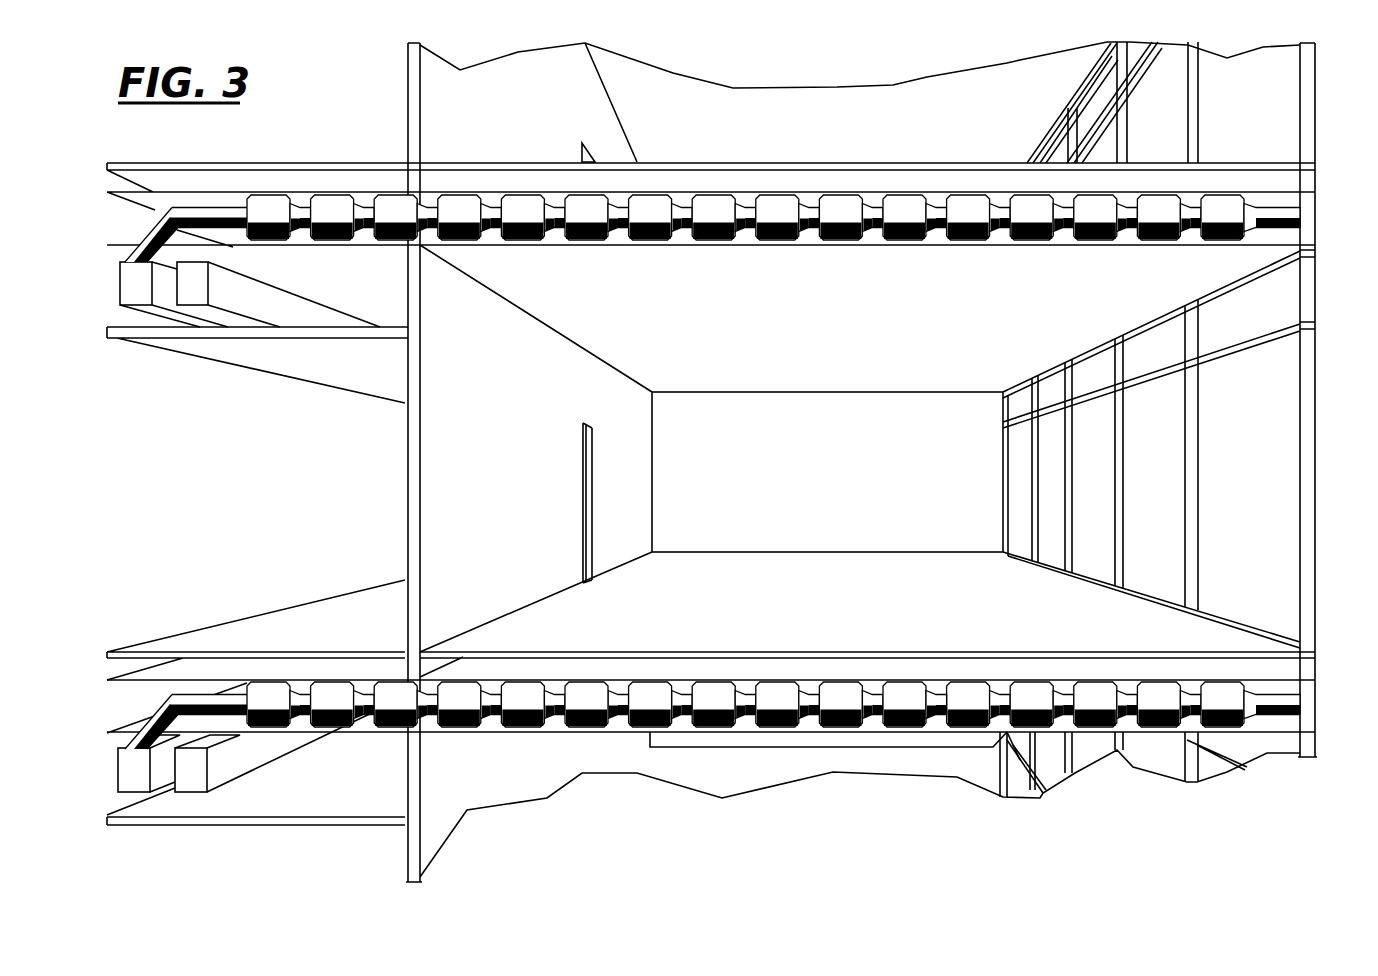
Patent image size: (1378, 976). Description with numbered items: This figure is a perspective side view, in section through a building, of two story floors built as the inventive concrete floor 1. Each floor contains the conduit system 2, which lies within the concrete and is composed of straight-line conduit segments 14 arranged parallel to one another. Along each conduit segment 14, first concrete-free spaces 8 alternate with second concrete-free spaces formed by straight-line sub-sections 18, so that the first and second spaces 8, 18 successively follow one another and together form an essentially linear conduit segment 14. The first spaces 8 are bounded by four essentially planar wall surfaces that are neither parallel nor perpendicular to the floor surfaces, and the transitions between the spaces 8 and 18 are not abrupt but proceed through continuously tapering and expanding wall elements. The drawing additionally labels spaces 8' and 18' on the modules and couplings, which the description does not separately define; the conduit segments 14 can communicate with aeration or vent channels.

The concrete floor 1 is at (1302, 705).
The conduit system 2 is at (841, 194).
The first concrete-free spaces 8 is at (904, 175).
The pipe module casing 8' is at (947, 513).
The straight-line conduit segment 14 is at (264, 730).
The straight-line sub-section 18 is at (809, 412).
The coupling sleeve 18' is at (876, 490).